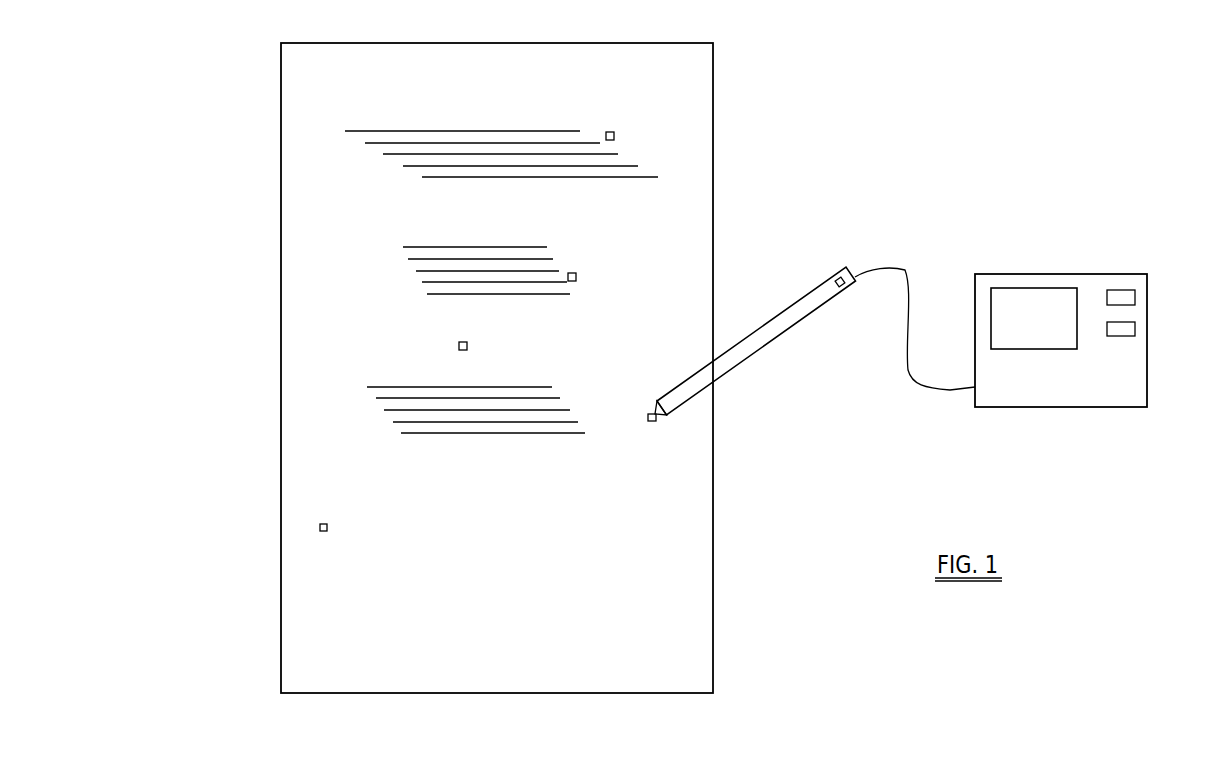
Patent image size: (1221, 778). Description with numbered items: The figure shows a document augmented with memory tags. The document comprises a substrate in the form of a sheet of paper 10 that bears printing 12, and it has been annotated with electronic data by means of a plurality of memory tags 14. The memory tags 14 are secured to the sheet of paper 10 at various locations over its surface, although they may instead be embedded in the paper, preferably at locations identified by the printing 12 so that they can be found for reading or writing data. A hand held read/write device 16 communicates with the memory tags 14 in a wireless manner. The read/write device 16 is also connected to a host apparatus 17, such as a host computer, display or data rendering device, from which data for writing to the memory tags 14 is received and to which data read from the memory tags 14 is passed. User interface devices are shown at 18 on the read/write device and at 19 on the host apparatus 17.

The sheet of paper 10 is at (313, 264).
The printing 12 is at (400, 155).
The memory tags 14 is at (614, 136).
The hand held read/write device 16 is at (782, 333).
The host apparatus 17 is at (1057, 405).
The user interface device 18 is at (838, 278).
The user interface devices 19 is at (1043, 288).